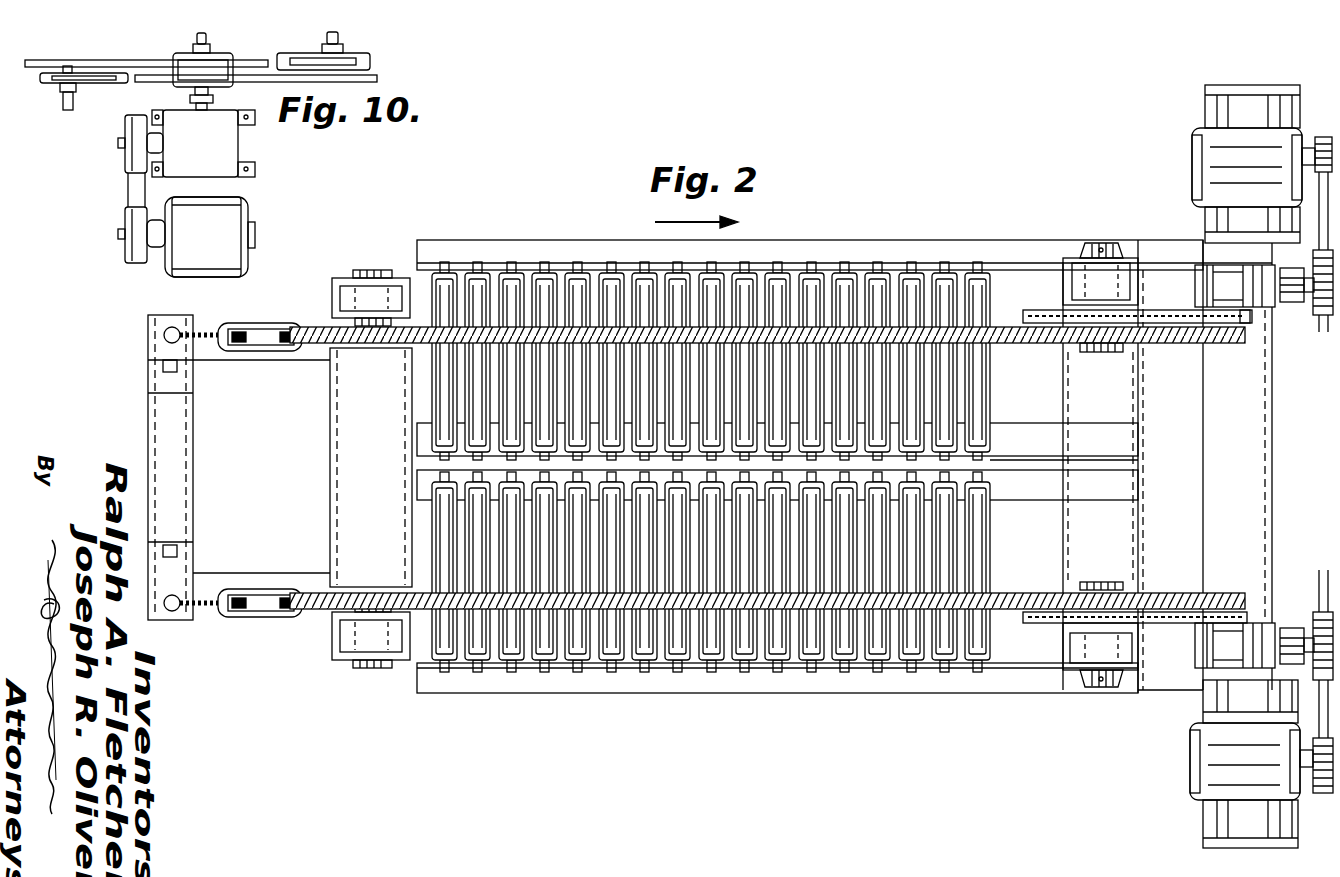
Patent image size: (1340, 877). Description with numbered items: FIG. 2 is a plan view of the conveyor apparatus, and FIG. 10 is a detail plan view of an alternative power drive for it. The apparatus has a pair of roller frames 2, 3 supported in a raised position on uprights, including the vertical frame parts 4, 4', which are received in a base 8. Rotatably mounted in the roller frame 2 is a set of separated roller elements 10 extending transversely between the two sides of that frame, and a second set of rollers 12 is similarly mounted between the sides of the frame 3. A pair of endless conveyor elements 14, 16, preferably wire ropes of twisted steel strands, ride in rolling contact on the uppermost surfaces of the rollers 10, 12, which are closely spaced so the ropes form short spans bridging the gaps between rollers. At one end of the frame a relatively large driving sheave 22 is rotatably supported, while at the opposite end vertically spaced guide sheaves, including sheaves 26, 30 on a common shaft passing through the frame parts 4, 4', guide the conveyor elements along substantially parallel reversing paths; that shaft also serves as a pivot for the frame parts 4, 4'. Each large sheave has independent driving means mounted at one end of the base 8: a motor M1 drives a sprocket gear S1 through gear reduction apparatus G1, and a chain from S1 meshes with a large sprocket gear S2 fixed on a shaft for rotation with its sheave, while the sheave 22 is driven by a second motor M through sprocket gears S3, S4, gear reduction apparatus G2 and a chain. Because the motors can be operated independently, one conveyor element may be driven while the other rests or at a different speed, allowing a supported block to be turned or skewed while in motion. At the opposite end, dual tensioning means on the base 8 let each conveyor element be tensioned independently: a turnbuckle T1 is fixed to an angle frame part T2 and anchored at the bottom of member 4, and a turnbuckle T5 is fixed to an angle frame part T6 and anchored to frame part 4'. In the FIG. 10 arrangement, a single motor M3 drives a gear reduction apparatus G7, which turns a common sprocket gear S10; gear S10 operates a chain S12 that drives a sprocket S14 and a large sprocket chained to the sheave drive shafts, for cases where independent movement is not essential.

In FIG. 2, the roller frame 2 is at (1004, 457).
In FIG. 2, the roller frame 3 is at (1007, 660).
In FIG. 2, the upright 4 is at (371, 652).
In FIG. 2, the vertical frame part 4' is at (371, 280).
In FIG. 2, the base 8 is at (1247, 515).
In FIG. 2, the roller elements 10 is at (985, 268).
In FIG. 2, the rollers 12 is at (974, 660).
In FIG. 2, the endless conveyor element 14 is at (1161, 480).
In FIG. 2, the endless conveyor element 16 is at (1175, 340).
In FIG. 2, the large driving sheave 22 is at (1217, 344).
In FIG. 2, the guide sheave 26 is at (325, 613).
In FIG. 2, the guide sheave 30 is at (316, 326).
In FIG. 2, the turnbuckle T1 is at (260, 620).
In FIG. 2, the angle frame part T2 is at (180, 612).
In FIG. 2, the turnbuckle T5 is at (247, 324).
In FIG. 2, the angle frame part T6 is at (171, 326).
In FIG. 2, the sprocket gear S1 is at (1253, 606).
In FIG. 2, the large sprocket gear S2 is at (1192, 623).
In FIG. 2, the sprocket gear S3 is at (1250, 313).
In FIG. 2, the sprocket gear S4 is at (1140, 320).
In FIG. 2, the gear reduction apparatus G1 is at (1290, 628).
In FIG. 2, the gear reduction apparatus G2 is at (1280, 302).
In FIG. 2, the motor M is at (1302, 128).
In FIG. 2, the motor M1 is at (1195, 794).
In FIG. 10, the common sprocket gear S10 is at (222, 88).
In FIG. 10, the chain S12 is at (378, 79).
In FIG. 10, the sprocket S14 is at (55, 83).
In FIG. 10, the gear reduction apparatus G7 is at (226, 147).
In FIG. 10, the motor M3 is at (222, 220).